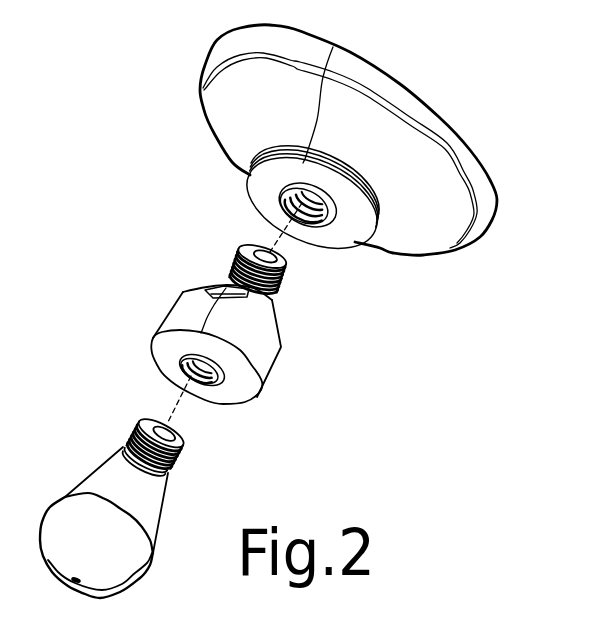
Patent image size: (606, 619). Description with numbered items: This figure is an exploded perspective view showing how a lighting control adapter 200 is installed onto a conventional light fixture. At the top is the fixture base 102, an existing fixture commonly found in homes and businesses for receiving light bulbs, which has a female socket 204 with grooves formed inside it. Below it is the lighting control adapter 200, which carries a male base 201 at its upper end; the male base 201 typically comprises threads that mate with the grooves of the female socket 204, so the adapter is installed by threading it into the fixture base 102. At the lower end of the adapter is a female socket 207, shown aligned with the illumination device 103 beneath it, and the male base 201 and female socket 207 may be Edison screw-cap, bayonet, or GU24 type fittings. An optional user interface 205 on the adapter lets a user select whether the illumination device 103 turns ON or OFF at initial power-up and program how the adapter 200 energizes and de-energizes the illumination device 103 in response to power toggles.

The fixture base 102 is at (452, 198).
The illumination device 103 is at (63, 525).
The lighting control adapter 200 is at (277, 387).
The male base 201 is at (283, 278).
The female socket 204 is at (308, 198).
The user interface 205 is at (238, 284).
The female socket 207 is at (192, 370).